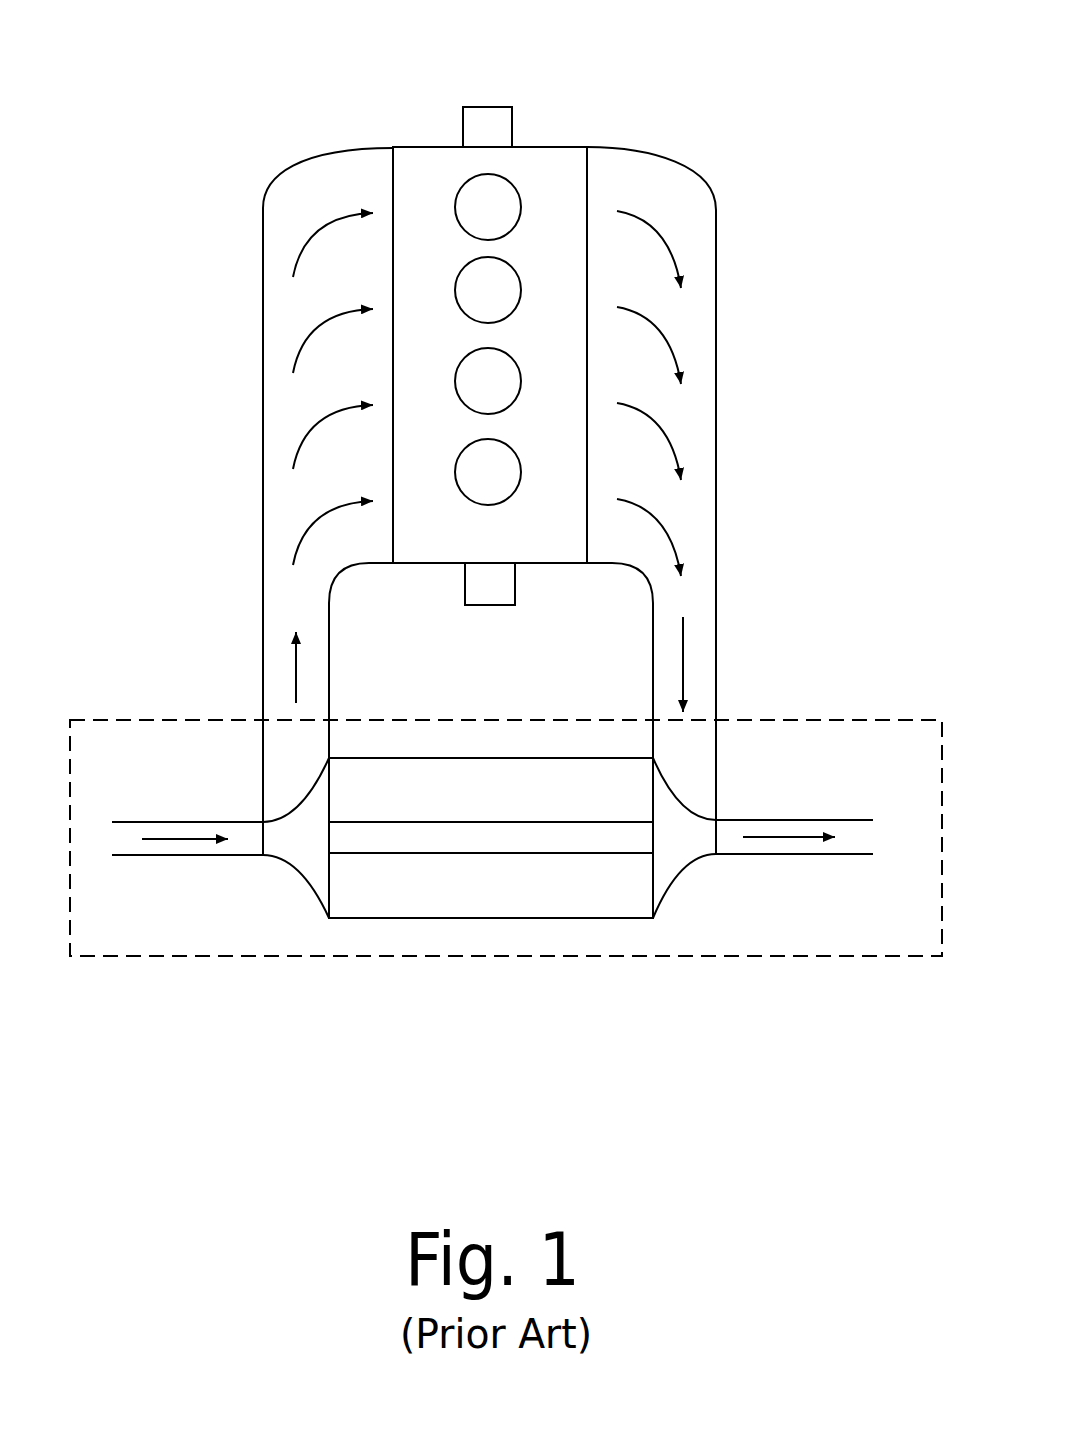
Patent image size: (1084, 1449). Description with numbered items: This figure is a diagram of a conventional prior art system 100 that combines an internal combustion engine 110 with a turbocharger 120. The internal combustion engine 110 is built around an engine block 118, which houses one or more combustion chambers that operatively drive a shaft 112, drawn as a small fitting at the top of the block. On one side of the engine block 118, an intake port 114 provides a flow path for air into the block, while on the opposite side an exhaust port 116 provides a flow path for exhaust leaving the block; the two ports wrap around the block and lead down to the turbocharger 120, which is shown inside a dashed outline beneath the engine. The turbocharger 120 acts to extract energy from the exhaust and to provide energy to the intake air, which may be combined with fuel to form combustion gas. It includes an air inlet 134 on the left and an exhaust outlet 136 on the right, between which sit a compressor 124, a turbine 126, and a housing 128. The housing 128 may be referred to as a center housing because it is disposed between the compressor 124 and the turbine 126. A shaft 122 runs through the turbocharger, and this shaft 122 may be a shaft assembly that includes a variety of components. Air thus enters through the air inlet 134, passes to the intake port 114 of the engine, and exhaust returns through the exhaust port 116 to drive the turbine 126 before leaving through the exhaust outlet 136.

The prior art system 100 is at (702, 50).
The internal combustion engine 110 is at (437, 146).
The shaft 112 is at (488, 107).
The intake port 114 is at (286, 170).
The exhaust port 116 is at (707, 188).
The engine block 118 is at (517, 553).
The turbocharger 120 is at (793, 718).
The shaft 122 is at (490, 855).
The compressor 124 is at (303, 870).
The turbine 126 is at (683, 865).
The housing 128 is at (517, 804).
The air inlet 134 is at (213, 820).
The exhaust outlet 136 is at (797, 818).